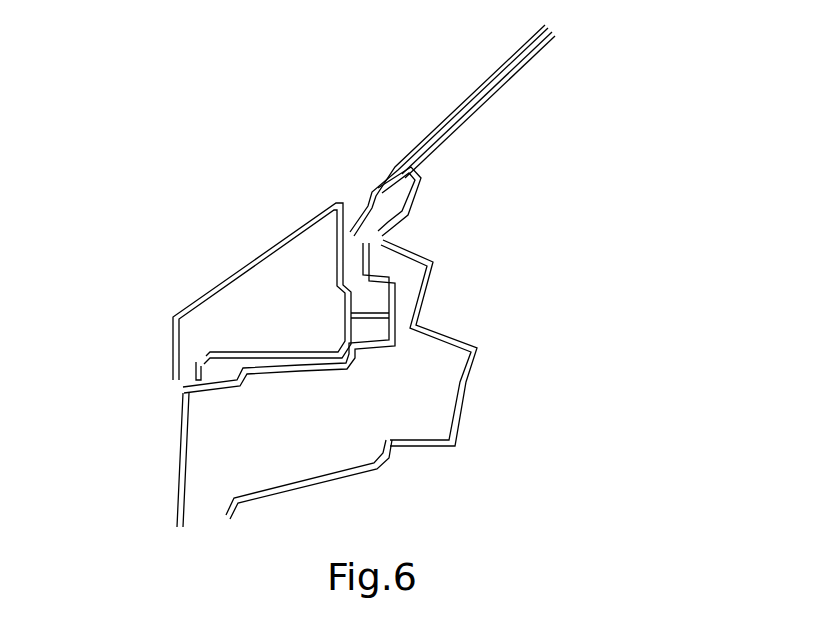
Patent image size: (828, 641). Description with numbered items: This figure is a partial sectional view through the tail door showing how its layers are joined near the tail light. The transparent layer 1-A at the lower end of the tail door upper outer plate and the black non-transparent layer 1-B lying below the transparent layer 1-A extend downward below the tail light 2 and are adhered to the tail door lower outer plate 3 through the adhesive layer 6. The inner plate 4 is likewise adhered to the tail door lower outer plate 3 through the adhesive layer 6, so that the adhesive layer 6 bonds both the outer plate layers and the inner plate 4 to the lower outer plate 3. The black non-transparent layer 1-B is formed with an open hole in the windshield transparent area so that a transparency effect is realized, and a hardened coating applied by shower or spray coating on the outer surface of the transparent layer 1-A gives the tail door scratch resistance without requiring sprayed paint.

The transparent layer 1-A is at (445, 118).
The black non-transparent layer 1-B is at (432, 147).
The tail light 2 is at (337, 242).
The tail door lower outer plate 3 is at (314, 373).
The inner plate 4 is at (462, 379).
The adhesive layer 6 is at (378, 238).